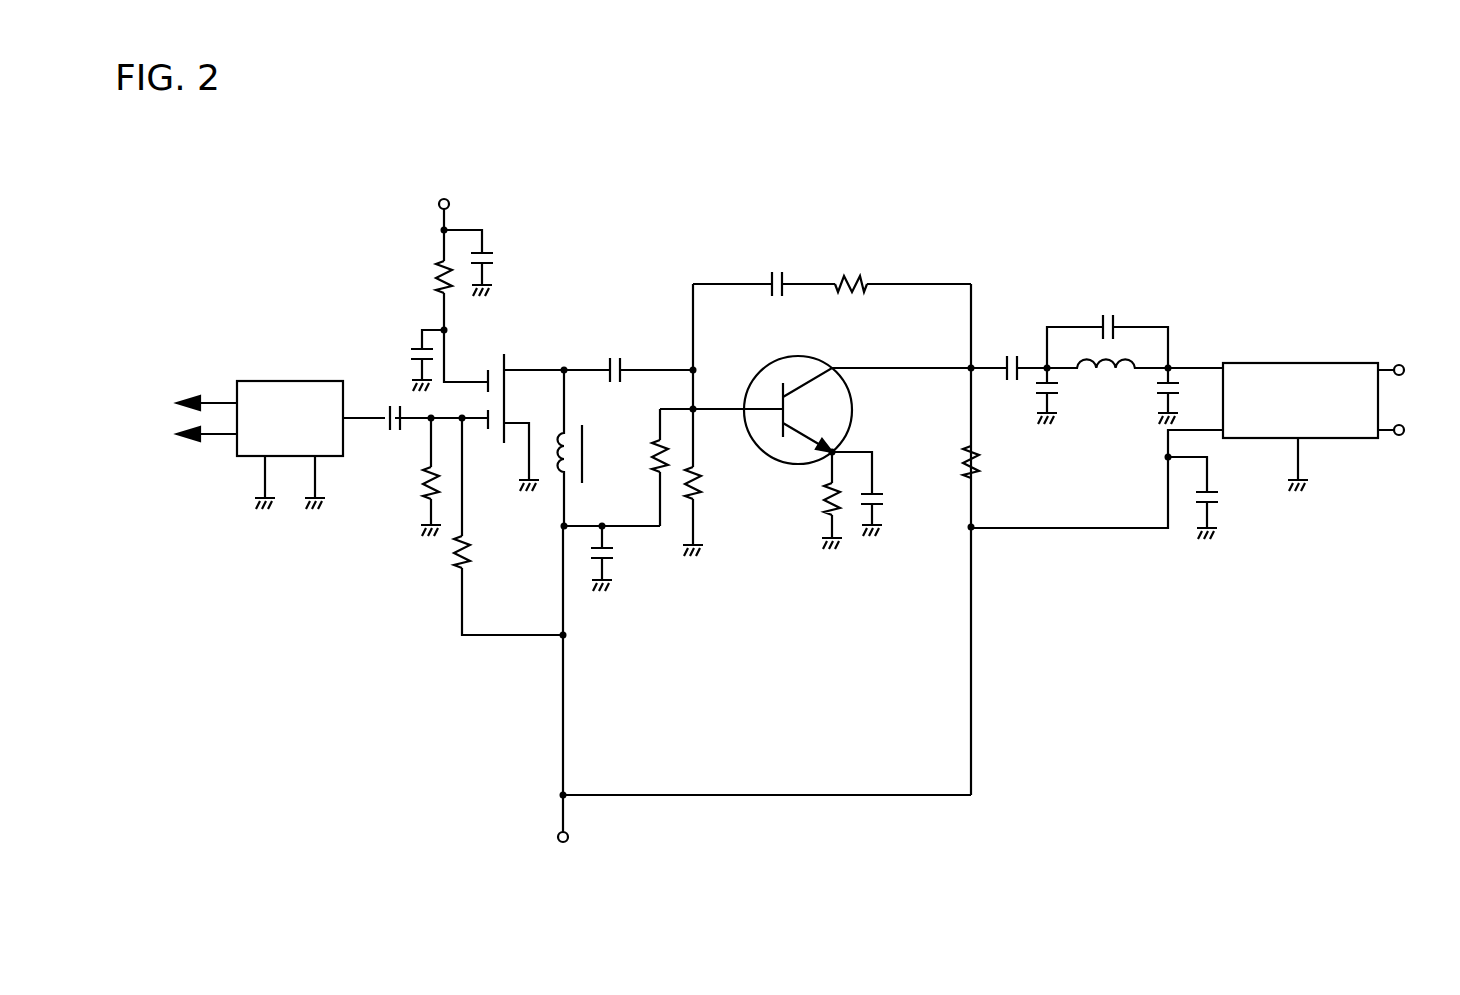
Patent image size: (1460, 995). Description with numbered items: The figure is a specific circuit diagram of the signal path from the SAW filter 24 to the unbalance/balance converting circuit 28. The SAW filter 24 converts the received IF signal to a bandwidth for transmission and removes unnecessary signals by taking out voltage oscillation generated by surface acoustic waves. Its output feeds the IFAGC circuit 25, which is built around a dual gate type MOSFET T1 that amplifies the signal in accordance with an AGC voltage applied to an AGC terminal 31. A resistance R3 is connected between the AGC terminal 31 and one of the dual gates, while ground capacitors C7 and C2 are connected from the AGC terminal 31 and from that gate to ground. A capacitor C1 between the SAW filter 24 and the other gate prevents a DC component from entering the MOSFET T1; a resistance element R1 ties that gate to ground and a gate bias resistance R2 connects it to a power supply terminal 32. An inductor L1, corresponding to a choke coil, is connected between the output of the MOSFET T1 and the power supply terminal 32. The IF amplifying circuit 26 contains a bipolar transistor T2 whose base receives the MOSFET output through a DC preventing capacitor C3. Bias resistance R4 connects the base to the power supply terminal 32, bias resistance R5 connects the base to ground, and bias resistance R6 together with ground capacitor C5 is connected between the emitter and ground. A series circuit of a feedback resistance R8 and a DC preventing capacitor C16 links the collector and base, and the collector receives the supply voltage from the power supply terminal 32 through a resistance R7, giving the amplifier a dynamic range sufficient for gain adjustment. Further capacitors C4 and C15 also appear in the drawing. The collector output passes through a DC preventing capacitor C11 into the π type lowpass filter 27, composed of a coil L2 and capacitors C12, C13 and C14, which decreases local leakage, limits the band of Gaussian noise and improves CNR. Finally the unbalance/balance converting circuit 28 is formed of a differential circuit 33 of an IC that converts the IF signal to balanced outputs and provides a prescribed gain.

The SAW filter 24 is at (311, 381).
The IFAGC circuit 25 is at (576, 245).
The IF amplifying circuit 26 is at (895, 245).
The π type lowpass filter 27 is at (1135, 288).
The unbalance/balance converting circuit 28 is at (1345, 290).
The AGC terminal 31 is at (444, 198).
The power supply terminal 32 is at (557, 836).
The differential circuit 33 is at (1308, 363).
The capacitor C1 is at (415, 434).
The ground capacitor C2 is at (428, 360).
The DC preventing capacitor C3 is at (628, 355).
The capacitor C4 is at (622, 558).
The ground capacitor C5 is at (879, 494).
The ground capacitor C7 is at (490, 263).
The DC preventing capacitor C11 is at (1009, 353).
The capacitor C12 is at (1017, 403).
The capacitor C13 is at (1107, 328).
The capacitor C14 is at (1163, 403).
The capacitor C15 is at (1123, 484).
The DC preventing capacitor C16 is at (764, 269).
The resistance element R1 is at (414, 477).
The gate bias resistance R2 is at (508, 526).
The resistance R3 is at (421, 280).
The bias resistance R4 is at (640, 467).
The bias resistance R5 is at (711, 482).
The bias resistance R6 is at (811, 500).
The resistance R7 is at (948, 461).
The feedback resistance R8 is at (902, 267).
The inductor L1 is at (588, 448).
The coil L2 is at (1107, 382).
The dual gate type MOSFET T1 is at (526, 422).
The bipolar transistor T2 is at (854, 400).